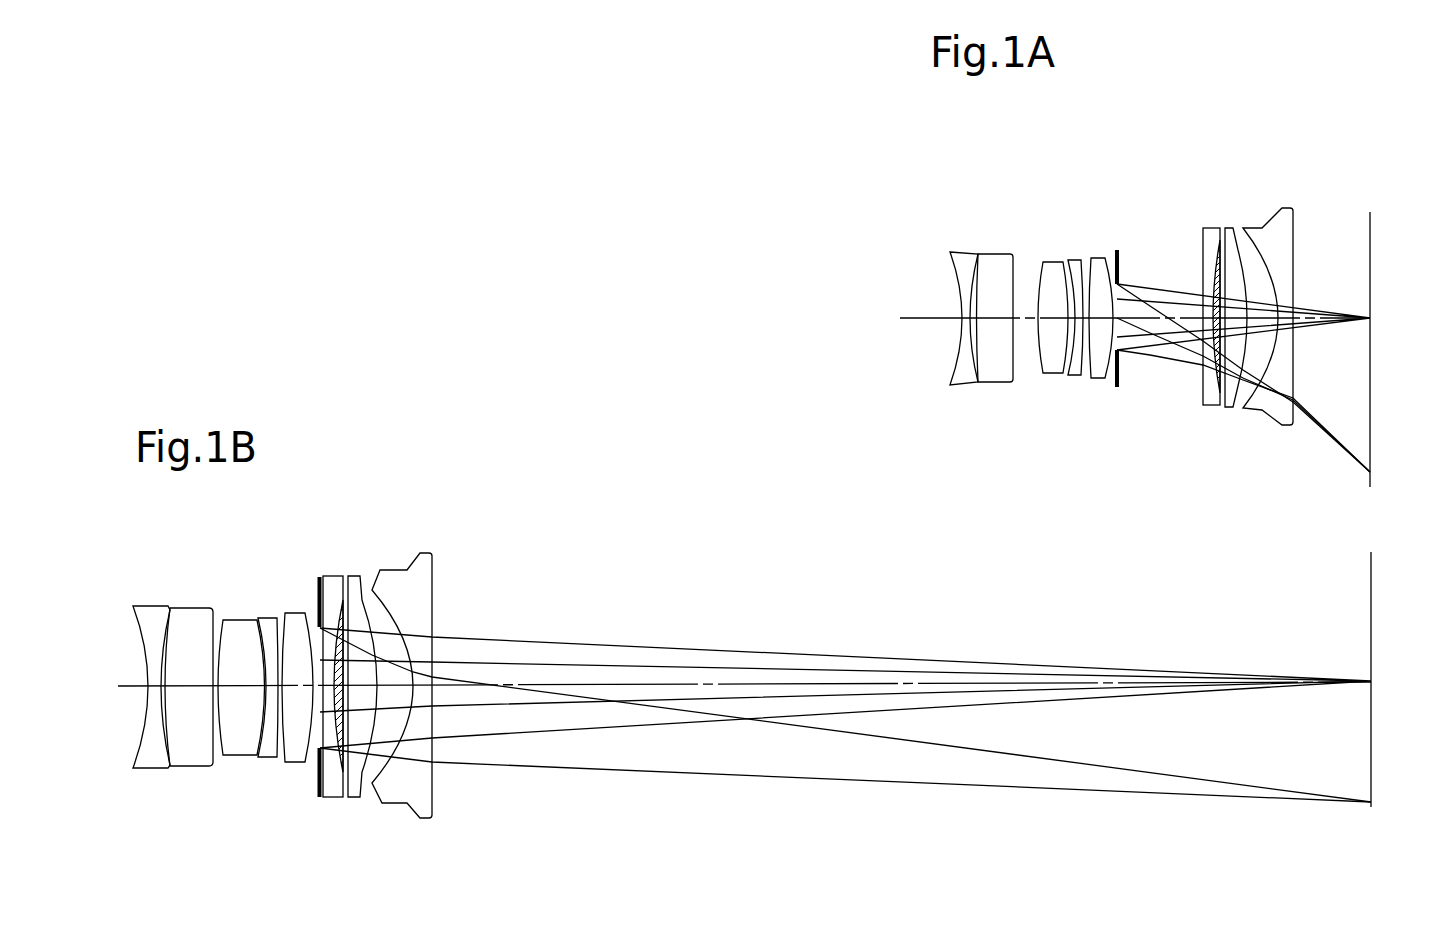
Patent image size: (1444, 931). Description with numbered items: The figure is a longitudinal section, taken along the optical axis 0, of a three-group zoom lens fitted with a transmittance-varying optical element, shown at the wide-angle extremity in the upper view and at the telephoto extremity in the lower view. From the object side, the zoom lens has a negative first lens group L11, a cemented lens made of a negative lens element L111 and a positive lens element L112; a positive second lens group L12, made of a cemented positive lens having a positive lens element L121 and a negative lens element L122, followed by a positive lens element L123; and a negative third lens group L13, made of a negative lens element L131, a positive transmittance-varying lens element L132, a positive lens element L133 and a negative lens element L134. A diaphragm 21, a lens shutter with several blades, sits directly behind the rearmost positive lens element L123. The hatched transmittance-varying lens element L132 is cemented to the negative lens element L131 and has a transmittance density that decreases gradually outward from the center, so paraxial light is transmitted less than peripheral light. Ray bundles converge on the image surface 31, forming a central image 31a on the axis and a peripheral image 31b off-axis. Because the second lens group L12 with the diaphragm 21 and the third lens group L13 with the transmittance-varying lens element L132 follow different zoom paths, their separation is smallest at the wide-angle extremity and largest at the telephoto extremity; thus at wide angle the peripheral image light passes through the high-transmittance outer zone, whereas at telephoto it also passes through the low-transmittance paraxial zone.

In FIG. 1A, the optical axis 0 is at (1127, 319).
In FIG. 1B, the optical axis 0 is at (731, 687).
In FIG. 1A, the first lens group L11 is at (1000, 144).
In FIG. 1B, the first lens group L11 is at (220, 575).
In FIG. 1A, the second lens group L12 is at (1142, 144).
In FIG. 1B, the second lens group L12 is at (307, 575).
In FIG. 1A, the third lens group L13 is at (1312, 144).
In FIG. 1B, the third lens group L13 is at (438, 536).
In FIG. 1A, the negative lens element L111 is at (962, 257).
In FIG. 1B, the negative lens element L111 is at (151, 687).
In FIG. 1A, the positive lens element L112 is at (997, 257).
In FIG. 1B, the positive lens element L112 is at (189, 687).
In FIG. 1A, the positive lens element L121 is at (1053, 265).
In FIG. 1B, the positive lens element L121 is at (241, 687).
In FIG. 1A, the negative lens element L122 is at (1078, 263).
In FIG. 1B, the negative lens element L122 is at (268, 687).
In FIG. 1A, the positive lens element L123 is at (1100, 260).
In FIG. 1B, the positive lens element L123 is at (297, 687).
In FIG. 1A, the negative lens element L131 is at (1208, 232).
In FIG. 1B, the negative lens element L131 is at (333, 686).
In FIG. 1A, the transmittance-varying lens element L132 is at (1213, 393).
In FIG. 1B, the transmittance-varying lens element L132 is at (350, 772).
In FIG. 1A, the positive lens element L133 is at (1228, 230).
In FIG. 1B, the positive lens element L133 is at (362, 686).
In FIG. 1A, the negative lens element L134 is at (1270, 228).
In FIG. 1B, the negative lens element L134 is at (402, 685).
In FIG. 1A, the diaphragm 21 is at (1120, 373).
In FIG. 1B, the diaphragm 21 is at (320, 783).
In FIG. 1A, the image surface 31 is at (1370, 225).
In FIG. 1B, the image surface 31 is at (1371, 582).
In FIG. 1A, the central image 31a is at (1370, 312).
In FIG. 1B, the central image 31a is at (1371, 672).
In FIG. 1A, the peripheral image 31b is at (1371, 470).
In FIG. 1B, the peripheral image 31b is at (1371, 795).